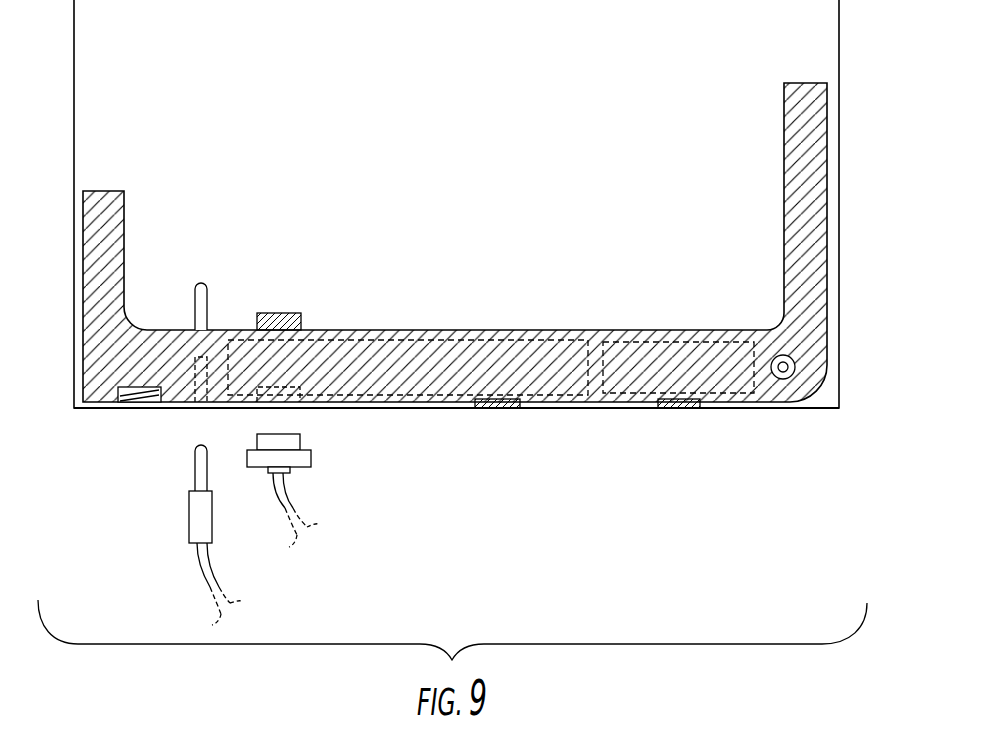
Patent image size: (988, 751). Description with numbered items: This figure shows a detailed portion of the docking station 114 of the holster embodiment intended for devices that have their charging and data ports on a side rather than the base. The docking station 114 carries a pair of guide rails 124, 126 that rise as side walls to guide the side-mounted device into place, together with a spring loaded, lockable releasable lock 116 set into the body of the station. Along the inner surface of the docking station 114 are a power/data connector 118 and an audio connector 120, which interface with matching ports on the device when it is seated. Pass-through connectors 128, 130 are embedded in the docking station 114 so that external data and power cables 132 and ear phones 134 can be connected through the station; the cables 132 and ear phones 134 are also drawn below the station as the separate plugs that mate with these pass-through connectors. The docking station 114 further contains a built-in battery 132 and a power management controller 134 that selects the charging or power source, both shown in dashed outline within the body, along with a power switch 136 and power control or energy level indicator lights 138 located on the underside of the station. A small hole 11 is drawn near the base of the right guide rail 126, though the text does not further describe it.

The mounting hole 11 is at (797, 367).
The docking station 114 is at (92, 282).
The releasable lock 116 is at (129, 393).
The power/data connector 118 is at (290, 313).
The audio connector 120 is at (203, 285).
The guide rail 124 is at (97, 202).
The guide rail 126 is at (800, 192).
The pass-through connector 128 is at (292, 395).
The pass-through connector 130 is at (203, 360).
The built-in battery 132 is at (545, 352).
The power management controller 134 is at (653, 348).
The power switch 136 is at (500, 409).
The energy level indicator lights 138 is at (678, 409).